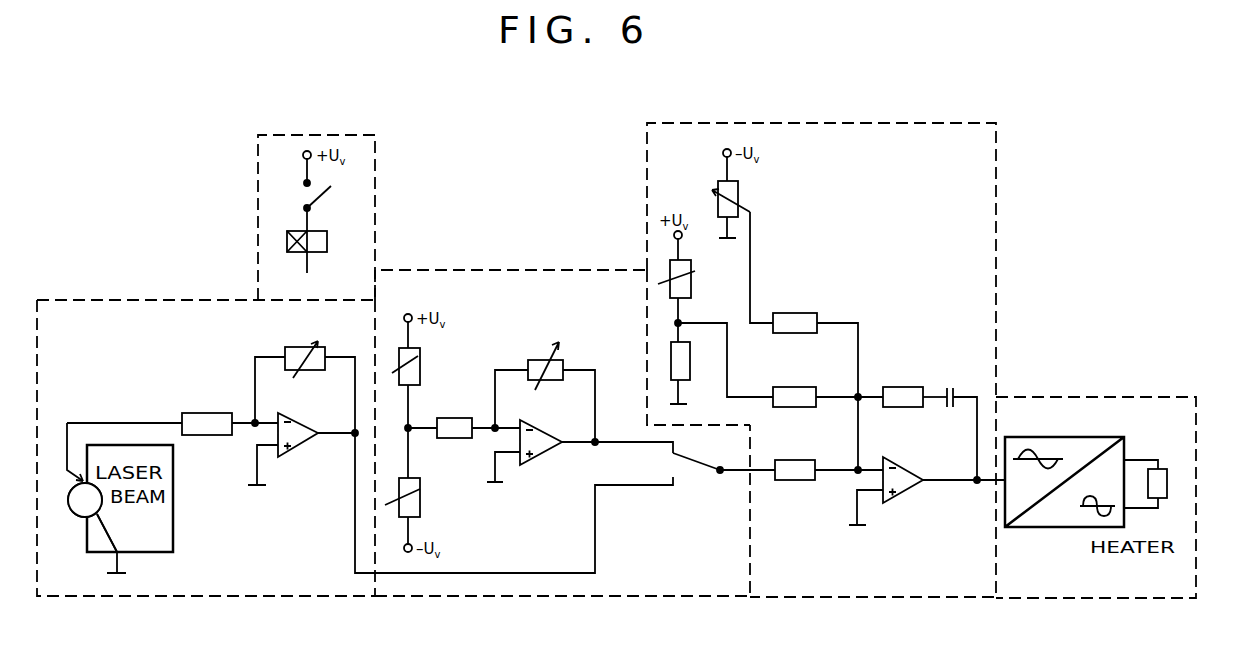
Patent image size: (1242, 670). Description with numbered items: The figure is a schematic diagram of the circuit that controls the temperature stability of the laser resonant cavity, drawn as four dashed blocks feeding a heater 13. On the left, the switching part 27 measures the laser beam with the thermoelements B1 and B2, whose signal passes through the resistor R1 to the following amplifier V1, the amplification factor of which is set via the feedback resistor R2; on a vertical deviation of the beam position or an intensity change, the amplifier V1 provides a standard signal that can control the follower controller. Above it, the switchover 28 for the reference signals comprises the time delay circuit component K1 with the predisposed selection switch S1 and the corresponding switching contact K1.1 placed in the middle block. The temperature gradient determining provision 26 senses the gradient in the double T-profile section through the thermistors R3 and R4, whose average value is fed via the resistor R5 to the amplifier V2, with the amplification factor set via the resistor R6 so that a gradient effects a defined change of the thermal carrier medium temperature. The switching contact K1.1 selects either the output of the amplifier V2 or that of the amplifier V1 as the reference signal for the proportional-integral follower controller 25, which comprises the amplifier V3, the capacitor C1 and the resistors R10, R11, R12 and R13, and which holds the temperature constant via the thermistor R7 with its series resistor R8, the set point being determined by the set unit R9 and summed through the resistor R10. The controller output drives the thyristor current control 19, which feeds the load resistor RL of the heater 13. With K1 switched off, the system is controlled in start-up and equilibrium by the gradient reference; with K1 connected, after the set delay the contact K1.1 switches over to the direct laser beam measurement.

The heater 13 is at (1158, 480).
The thyristor current control 19 is at (1058, 520).
The proportional-integral follower controller 25 is at (835, 585).
The temperature gradient determining provision 26 is at (528, 585).
The switching part 27 is at (282, 585).
The switchover 28 is at (362, 172).
The resistor R1 is at (207, 412).
The resistor R2 is at (293, 347).
The thermistor R3 is at (420, 362).
The thermistor R4 is at (420, 505).
The resistor R5 is at (448, 421).
The resistor R6 is at (540, 360).
The thermistor R7 is at (692, 286).
The resistor R8 is at (684, 362).
The set point controller R9 is at (739, 199).
The resistor R10 is at (790, 312).
The resistor R11 is at (790, 386).
The resistor R12 is at (802, 481).
The resistor R13 is at (903, 386).
The load resistor RL is at (1163, 468).
The capacitor C1 is at (950, 385).
The amplifier V1 is at (300, 426).
The amplifier V2 is at (530, 452).
The amplifier V3 is at (905, 480).
The thermoelement B1 is at (74, 478).
The thermoelement B2 is at (84, 517).
The selection switch S1 is at (312, 199).
The time delay circuit component K1 is at (327, 241).
The switching contact K1.1 is at (678, 465).